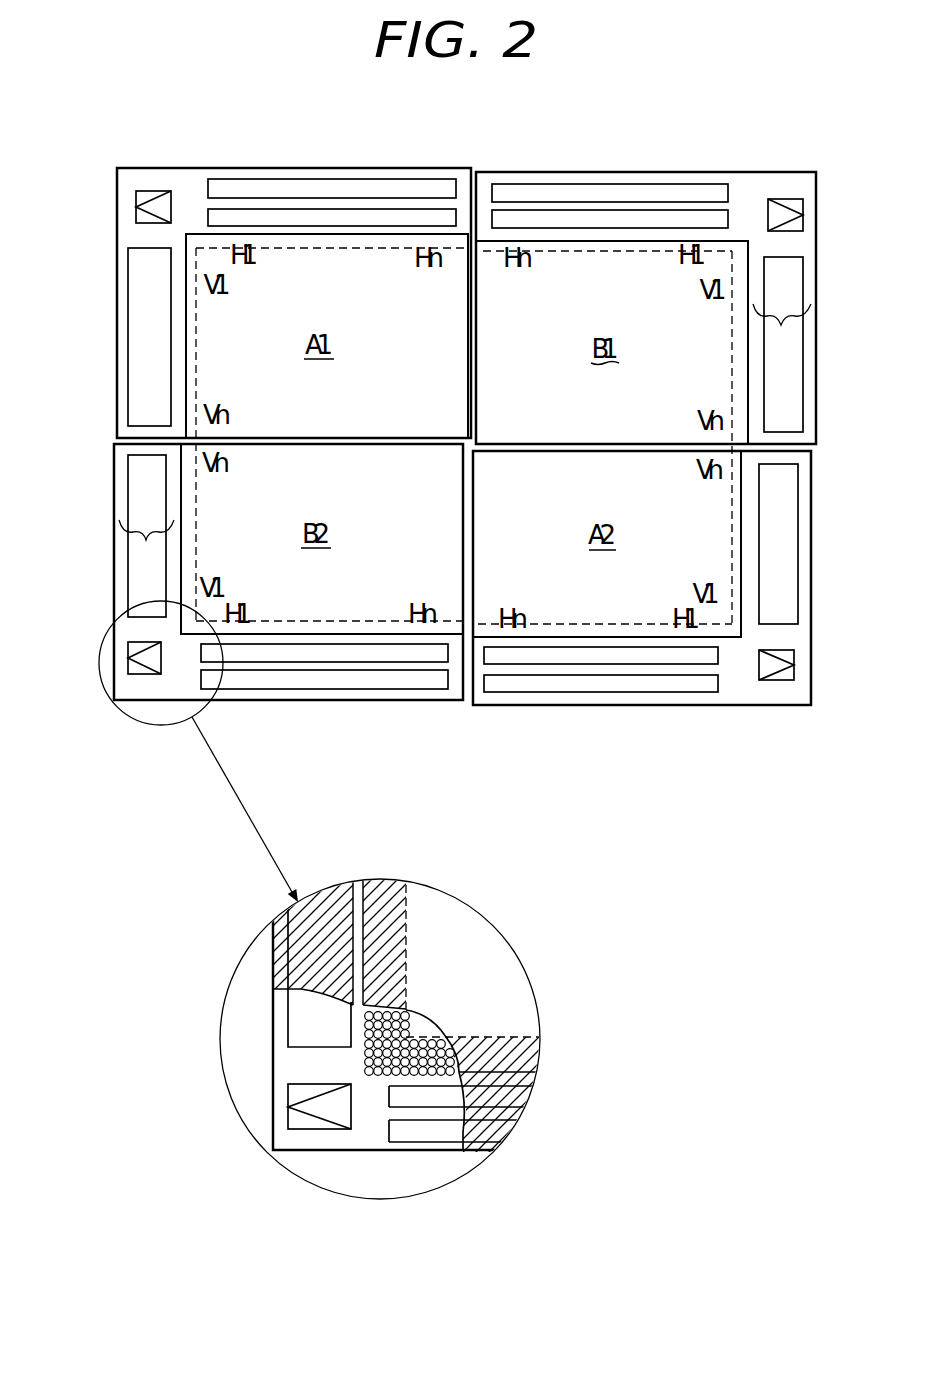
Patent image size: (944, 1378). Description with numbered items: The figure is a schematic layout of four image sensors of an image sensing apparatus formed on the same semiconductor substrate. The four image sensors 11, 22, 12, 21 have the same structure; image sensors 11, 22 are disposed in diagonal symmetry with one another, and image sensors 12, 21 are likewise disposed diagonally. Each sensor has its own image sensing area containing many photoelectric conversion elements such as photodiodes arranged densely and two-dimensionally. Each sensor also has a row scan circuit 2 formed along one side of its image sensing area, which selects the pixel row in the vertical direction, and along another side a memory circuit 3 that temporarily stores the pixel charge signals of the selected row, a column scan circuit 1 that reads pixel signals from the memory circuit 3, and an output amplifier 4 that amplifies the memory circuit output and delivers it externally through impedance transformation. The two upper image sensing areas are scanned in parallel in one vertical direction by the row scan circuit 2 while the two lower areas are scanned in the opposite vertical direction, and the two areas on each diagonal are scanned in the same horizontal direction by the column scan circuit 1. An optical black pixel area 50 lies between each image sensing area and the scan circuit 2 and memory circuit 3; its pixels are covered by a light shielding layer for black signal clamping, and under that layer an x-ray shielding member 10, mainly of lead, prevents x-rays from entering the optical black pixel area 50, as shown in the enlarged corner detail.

The column scan circuit 1 is at (344, 187).
The row scan circuit 2 is at (134, 348).
The memory circuit 3 is at (394, 216).
The output amplifier 4 is at (133, 211).
The x-ray shielding member 10 is at (126, 532).
The image sensor 11 is at (115, 272).
The image sensor 12 is at (818, 263).
The image sensor 21 is at (114, 476).
The image sensor 22 is at (814, 486).
The optical black pixel area 50 is at (280, 240).